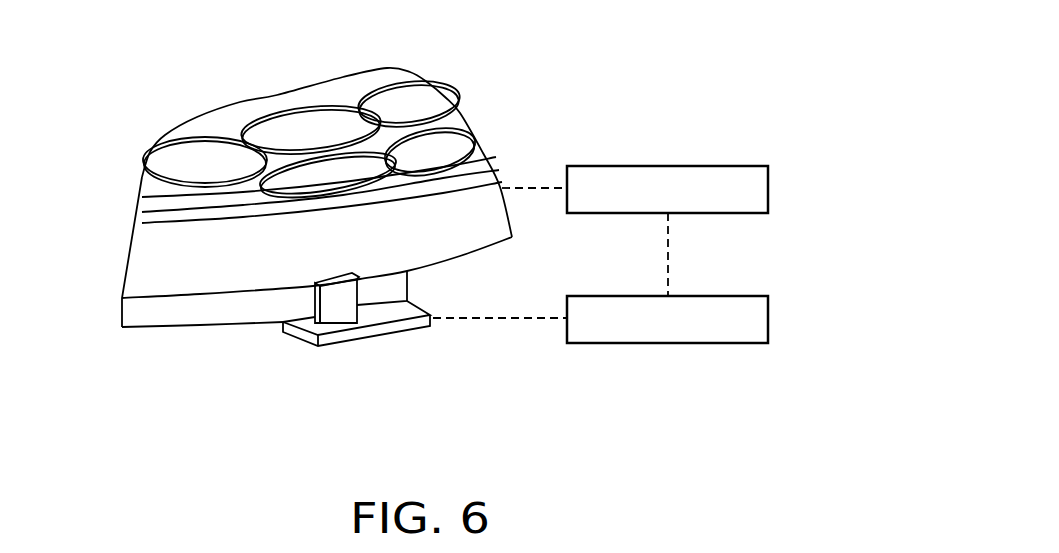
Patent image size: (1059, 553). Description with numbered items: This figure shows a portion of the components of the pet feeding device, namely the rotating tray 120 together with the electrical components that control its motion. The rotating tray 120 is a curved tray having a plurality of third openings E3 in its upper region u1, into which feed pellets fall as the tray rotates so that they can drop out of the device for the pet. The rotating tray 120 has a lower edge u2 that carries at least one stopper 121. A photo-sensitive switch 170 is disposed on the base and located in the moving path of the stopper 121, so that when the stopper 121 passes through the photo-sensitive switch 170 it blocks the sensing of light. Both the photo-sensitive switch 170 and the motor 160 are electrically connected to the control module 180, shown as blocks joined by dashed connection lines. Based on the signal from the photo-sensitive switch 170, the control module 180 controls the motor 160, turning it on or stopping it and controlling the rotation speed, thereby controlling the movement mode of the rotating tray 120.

The rotating tray 120 is at (163, 262).
The stopper 121 is at (187, 308).
The photo-sensitive switch 170 is at (338, 312).
The motor 160 is at (717, 166).
The control module 180 is at (717, 296).
The third openings E3 is at (212, 170).
The first unit u1 is at (343, 93).
The lower edge u2 is at (462, 255).